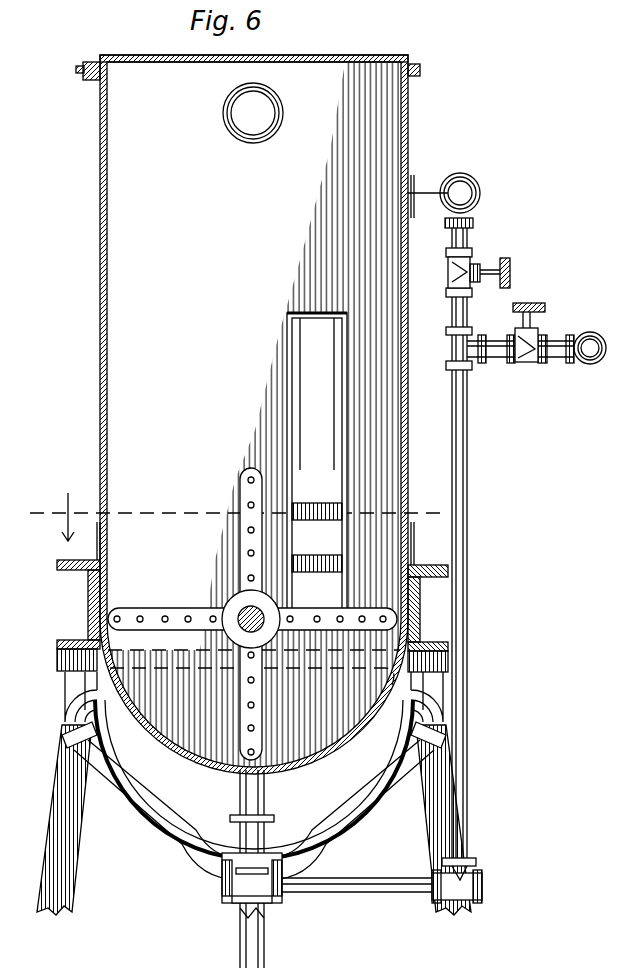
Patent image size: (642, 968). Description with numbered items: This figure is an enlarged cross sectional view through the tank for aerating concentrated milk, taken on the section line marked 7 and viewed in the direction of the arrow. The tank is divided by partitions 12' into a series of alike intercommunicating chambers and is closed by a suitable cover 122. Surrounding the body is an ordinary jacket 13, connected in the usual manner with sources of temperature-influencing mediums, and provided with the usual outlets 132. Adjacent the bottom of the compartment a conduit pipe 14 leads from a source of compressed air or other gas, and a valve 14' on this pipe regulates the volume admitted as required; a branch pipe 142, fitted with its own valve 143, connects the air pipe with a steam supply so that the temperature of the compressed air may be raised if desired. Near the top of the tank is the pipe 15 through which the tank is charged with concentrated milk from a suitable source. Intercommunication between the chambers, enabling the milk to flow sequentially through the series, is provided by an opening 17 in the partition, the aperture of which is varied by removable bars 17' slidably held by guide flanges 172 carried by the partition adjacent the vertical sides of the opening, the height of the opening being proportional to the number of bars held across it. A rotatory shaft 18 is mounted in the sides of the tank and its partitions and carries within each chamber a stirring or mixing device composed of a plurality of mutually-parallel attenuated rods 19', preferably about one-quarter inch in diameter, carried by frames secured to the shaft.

The section line 7 is at (231, 517).
The partitions 12' is at (279, 414).
The cover 122 is at (387, 62).
The jacket 13 is at (254, 779).
The outlets 132 is at (172, 852).
The conduit pipes 14 is at (264, 869).
The valve 14' is at (465, 515).
The branch pipe 142 is at (488, 362).
The valve 143 is at (536, 346).
The pipe 15 is at (276, 108).
The openings 17 is at (317, 448).
The removable bars 17' is at (317, 551).
The guide flanges 172 is at (317, 394).
The rotatory shaft 18 is at (258, 628).
The attenuated rods 19' is at (252, 614).